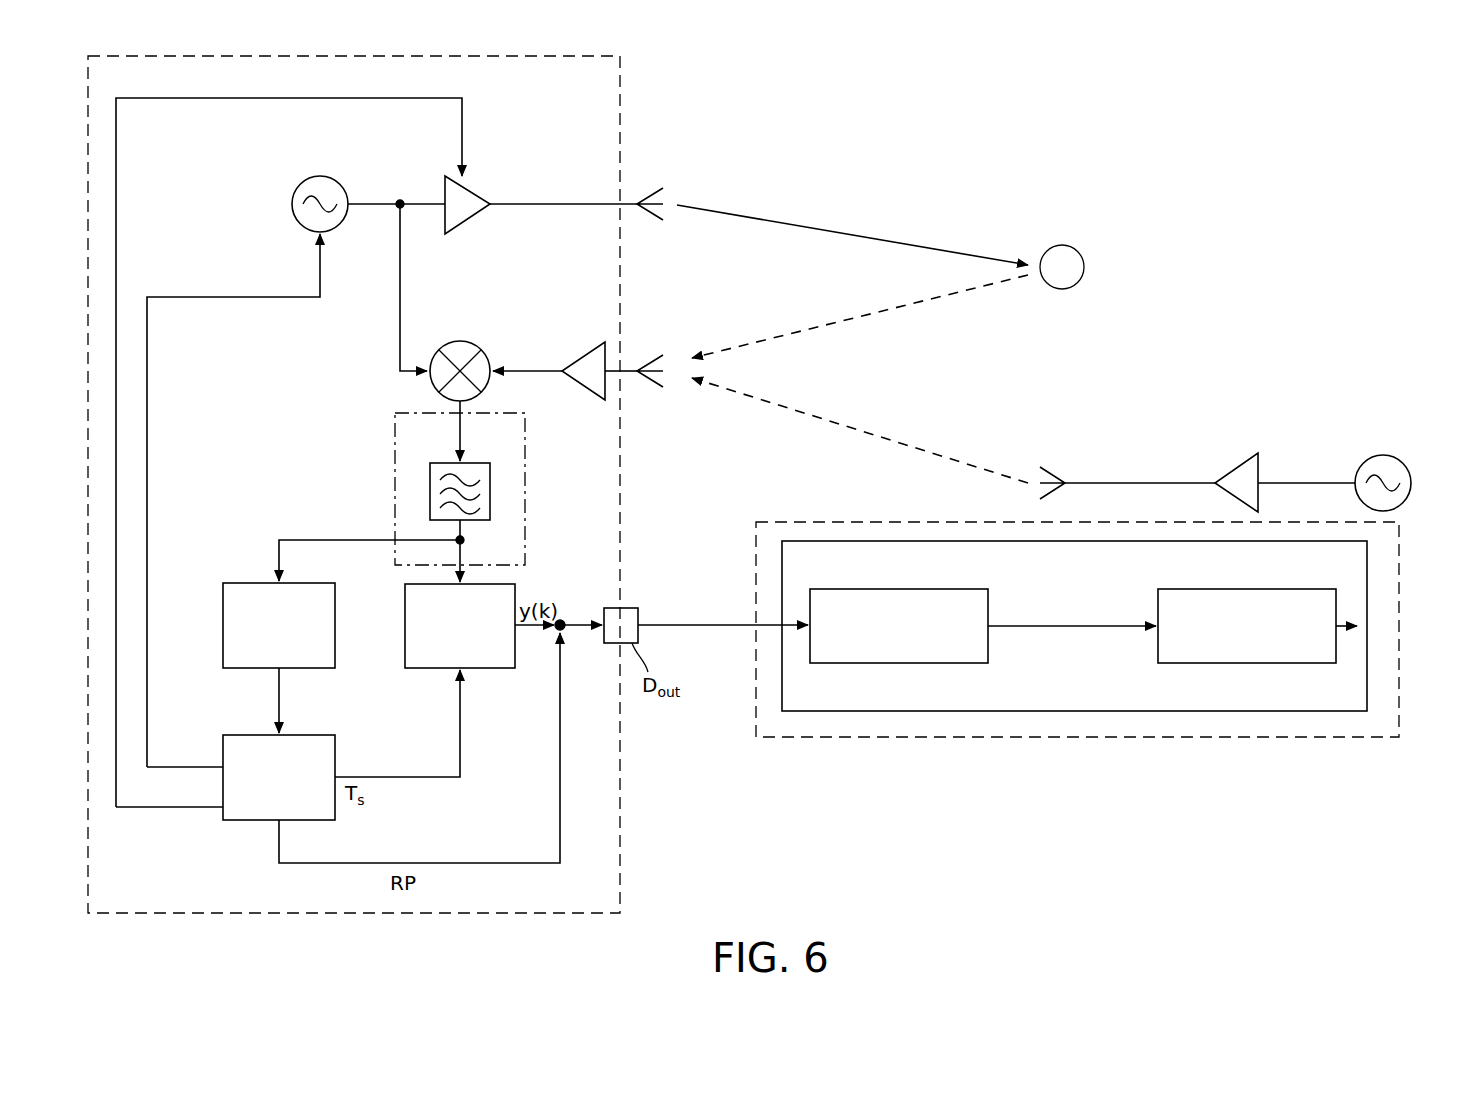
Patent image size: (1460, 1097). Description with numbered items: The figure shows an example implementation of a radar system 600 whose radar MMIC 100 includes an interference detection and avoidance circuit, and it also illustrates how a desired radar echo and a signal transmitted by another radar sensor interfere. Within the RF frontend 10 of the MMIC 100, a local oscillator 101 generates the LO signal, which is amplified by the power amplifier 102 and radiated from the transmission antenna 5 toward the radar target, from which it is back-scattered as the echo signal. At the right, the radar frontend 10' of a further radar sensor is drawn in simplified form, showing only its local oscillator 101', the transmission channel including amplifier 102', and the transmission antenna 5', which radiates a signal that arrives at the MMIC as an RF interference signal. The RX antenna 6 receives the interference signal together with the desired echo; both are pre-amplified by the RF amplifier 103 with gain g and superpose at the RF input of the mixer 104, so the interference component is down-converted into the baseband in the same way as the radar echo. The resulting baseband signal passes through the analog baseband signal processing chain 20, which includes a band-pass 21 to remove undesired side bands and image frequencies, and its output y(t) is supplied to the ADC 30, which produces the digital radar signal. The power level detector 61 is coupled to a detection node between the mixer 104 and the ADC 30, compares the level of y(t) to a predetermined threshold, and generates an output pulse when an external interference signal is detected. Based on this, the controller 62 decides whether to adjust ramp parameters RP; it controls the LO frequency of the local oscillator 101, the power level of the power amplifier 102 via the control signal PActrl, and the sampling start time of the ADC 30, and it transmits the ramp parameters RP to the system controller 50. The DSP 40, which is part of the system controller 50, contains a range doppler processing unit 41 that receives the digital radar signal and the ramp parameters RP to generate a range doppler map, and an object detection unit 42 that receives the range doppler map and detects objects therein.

The radar system 600 is at (1150, 148).
The radar MMIC 100 is at (621, 90).
The RF frontend 10 is at (376, 469).
The local oscillator 101 is at (320, 173).
The power amplifier 102 is at (498, 196).
The transmission antenna 5 is at (651, 178).
The mixer 104 is at (460, 341).
The RF amplifier 103 is at (590, 350).
The RX antenna 6 is at (650, 360).
The analog baseband signal processing chain 20 is at (395, 472).
The band-pass 21 is at (490, 482).
The ADC 30 is at (460, 626).
The power level detector 61 is at (223, 620).
The controller 62 is at (335, 757).
The DSP 40 is at (1367, 605).
The range doppler processing unit 41 is at (895, 663).
The object detection unit 42 is at (1245, 663).
The system controller 50 is at (1077, 737).
The radar frontend of a further radar sensor 10' is at (1233, 396).
The transmission antenna 5' is at (1049, 452).
The amplifier 102' is at (1245, 458).
The local oscillator 101' is at (1388, 452).